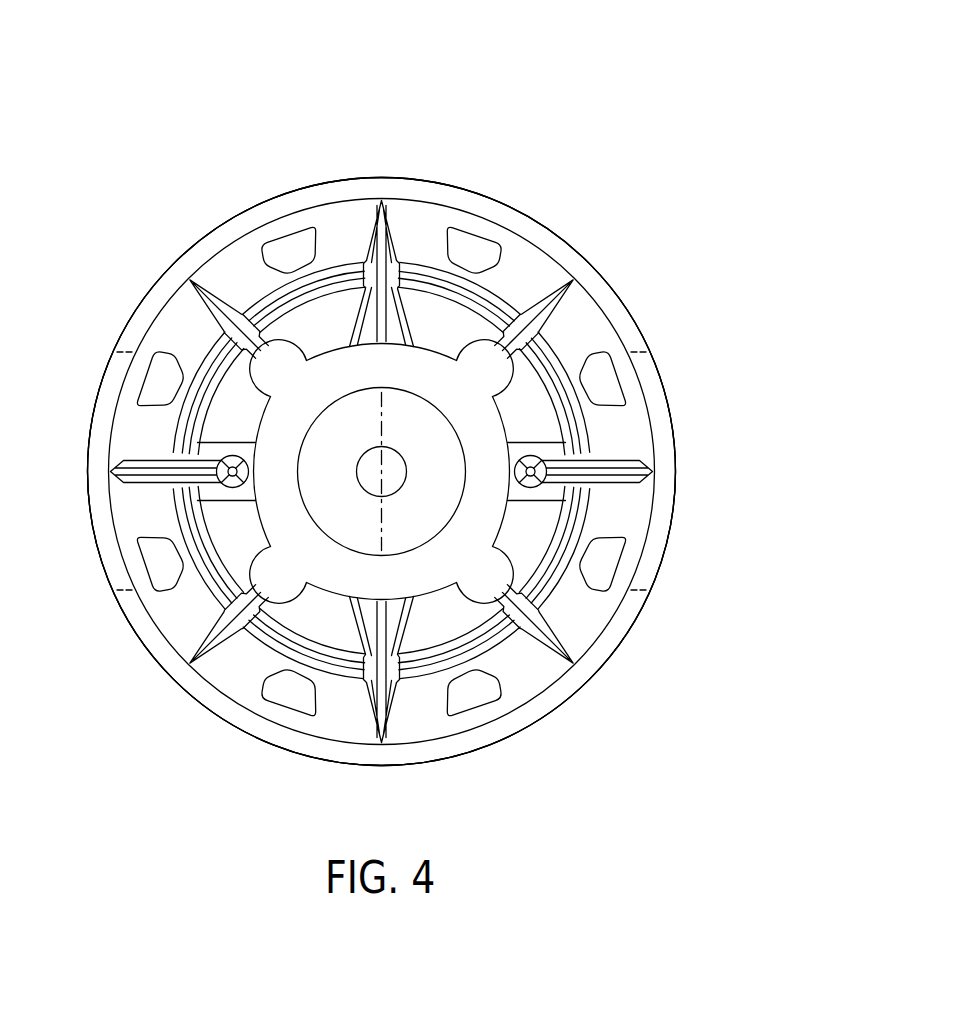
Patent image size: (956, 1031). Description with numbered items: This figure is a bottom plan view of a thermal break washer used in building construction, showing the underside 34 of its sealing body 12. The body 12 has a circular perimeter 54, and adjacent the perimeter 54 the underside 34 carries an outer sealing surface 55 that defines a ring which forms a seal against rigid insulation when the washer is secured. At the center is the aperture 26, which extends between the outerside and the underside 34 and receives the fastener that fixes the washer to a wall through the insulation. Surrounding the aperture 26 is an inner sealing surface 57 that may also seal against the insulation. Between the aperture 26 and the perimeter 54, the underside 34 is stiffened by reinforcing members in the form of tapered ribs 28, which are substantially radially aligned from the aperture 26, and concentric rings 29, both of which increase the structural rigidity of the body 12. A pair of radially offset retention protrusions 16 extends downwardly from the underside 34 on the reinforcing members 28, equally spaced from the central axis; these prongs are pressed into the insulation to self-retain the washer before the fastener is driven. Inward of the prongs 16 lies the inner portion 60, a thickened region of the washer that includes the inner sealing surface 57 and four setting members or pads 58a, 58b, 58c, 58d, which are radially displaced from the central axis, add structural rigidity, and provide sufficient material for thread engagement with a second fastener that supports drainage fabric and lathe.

The sealing body 12 is at (504, 97).
The retention protrusions 16 is at (557, 478).
The central aperture 26 is at (367, 447).
The reinforcing members 28 is at (546, 318).
The concentric rings 29 is at (592, 440).
The underside 34 is at (567, 254).
The circular perimeter 54 is at (589, 692).
The outer sealing surface 55 is at (165, 650).
The inner sealing surface 57 is at (407, 423).
The setting member 58a is at (490, 388).
The setting member 58b is at (494, 576).
The setting member 58c is at (288, 575).
The setting member 58d is at (278, 358).
The inner portion 60 is at (442, 565).